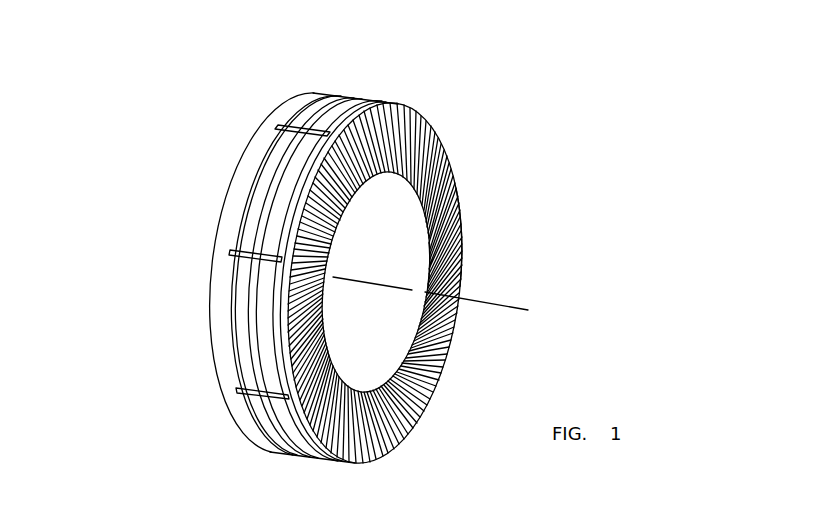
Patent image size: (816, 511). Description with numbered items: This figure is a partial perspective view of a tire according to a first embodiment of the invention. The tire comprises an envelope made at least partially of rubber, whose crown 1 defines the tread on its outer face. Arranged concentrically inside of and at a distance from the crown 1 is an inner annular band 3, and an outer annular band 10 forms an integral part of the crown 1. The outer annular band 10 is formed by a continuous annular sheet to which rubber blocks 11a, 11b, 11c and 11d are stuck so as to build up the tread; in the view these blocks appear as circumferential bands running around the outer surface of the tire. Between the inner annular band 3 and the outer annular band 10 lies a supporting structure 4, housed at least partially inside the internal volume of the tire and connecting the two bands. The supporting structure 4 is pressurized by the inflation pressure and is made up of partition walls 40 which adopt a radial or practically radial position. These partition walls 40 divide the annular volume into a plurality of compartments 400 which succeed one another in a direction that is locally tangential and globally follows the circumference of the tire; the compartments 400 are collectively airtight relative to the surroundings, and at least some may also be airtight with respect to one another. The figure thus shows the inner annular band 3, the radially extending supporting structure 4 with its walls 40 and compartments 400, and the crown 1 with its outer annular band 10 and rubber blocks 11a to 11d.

The crown 1 is at (419, 86).
The inner annular band 3 is at (402, 270).
The supporting structure 4 is at (389, 439).
The partition walls 40 is at (433, 172).
The compartments 400 is at (451, 200).
The outer annular band 10 is at (250, 259).
The rubber block 11a is at (225, 215).
The rubber block 11b is at (263, 175).
The rubber block 11c is at (280, 132).
The rubber block 11d is at (293, 93).